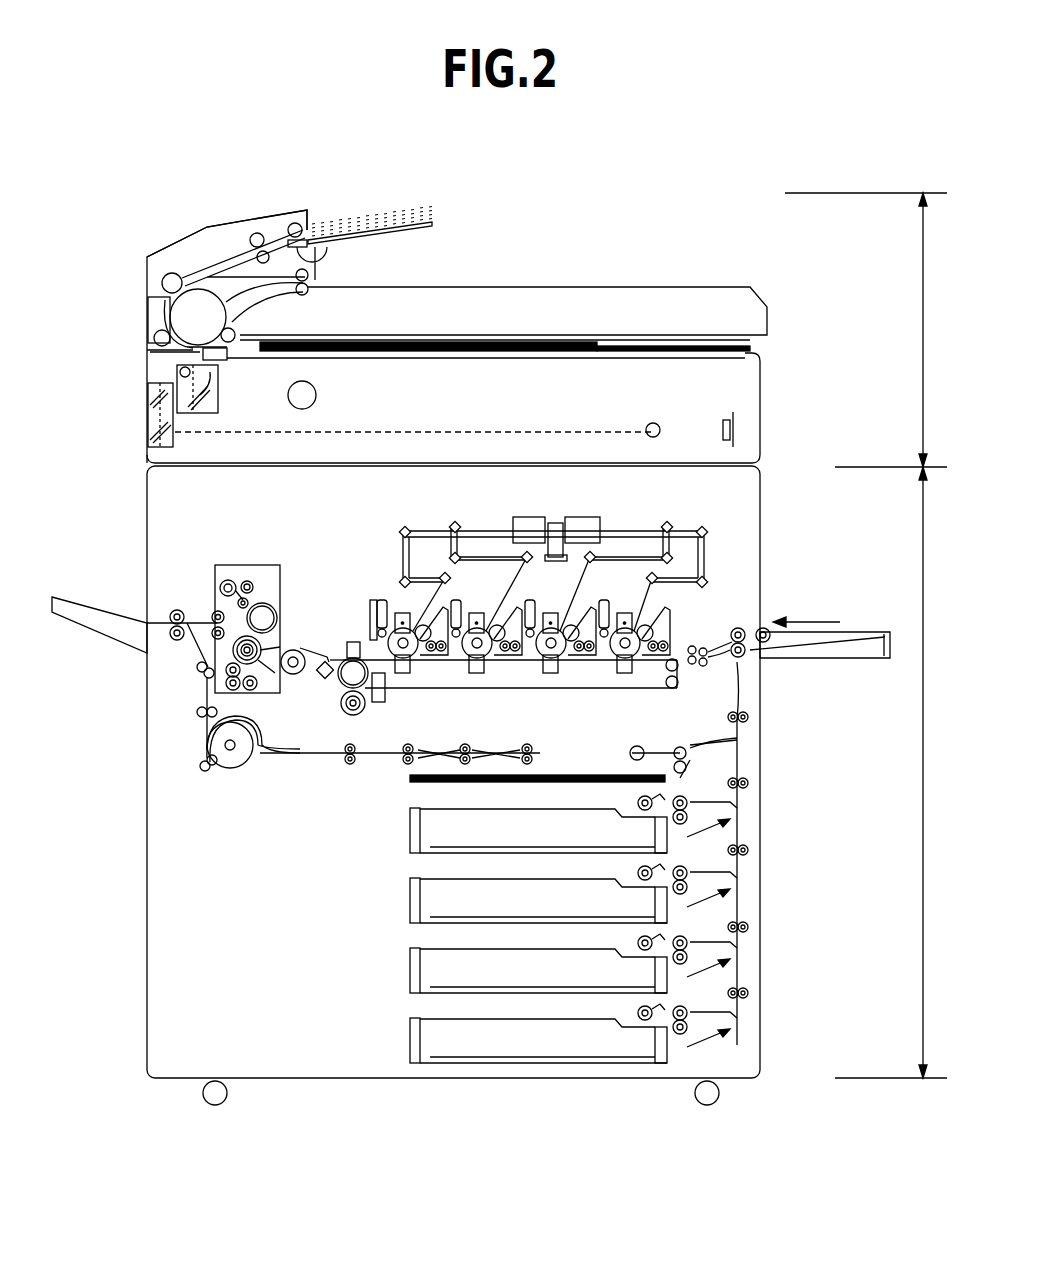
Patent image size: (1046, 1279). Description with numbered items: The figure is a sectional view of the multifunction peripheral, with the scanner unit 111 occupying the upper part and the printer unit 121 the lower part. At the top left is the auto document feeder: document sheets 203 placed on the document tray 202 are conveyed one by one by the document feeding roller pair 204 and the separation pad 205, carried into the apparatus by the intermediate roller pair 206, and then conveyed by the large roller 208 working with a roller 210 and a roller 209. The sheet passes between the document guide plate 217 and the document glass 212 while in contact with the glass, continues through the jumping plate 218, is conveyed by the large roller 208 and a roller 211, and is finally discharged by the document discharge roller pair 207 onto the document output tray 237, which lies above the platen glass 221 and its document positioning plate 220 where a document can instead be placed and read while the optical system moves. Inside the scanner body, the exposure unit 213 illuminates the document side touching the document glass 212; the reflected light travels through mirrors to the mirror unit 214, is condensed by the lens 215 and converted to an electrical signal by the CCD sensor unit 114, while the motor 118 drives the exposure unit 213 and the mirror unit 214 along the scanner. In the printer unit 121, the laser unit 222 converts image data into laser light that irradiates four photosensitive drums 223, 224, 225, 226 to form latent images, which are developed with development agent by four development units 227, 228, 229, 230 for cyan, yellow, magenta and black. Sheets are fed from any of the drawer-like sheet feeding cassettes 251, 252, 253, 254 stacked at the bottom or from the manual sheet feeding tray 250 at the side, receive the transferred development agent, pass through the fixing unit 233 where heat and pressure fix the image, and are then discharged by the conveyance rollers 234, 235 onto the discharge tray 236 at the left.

The scanner unit 111 is at (866, 330).
The printer unit 121 is at (879, 772).
The CCD sensor unit 114 is at (726, 420).
The motor 118 is at (316, 395).
The document tray 202 is at (434, 225).
The document sheets 203 is at (405, 205).
The document feeding roller pair 204 is at (297, 208).
The separation pad 205 is at (300, 224).
The intermediate roller pair 206 is at (257, 233).
The document discharge roller pair 207 is at (310, 283).
The large roller 208 is at (165, 320).
The roller 209 is at (172, 273).
The roller 210 is at (154, 338).
The roller 211 is at (236, 335).
The document glass 212 is at (150, 352).
The exposure unit 213 is at (205, 413).
The mirror unit 214 is at (148, 435).
The lens 215 is at (653, 423).
The document guide plate 217 is at (195, 342).
The jumping plate 218 is at (215, 360).
The document positioning plate 220 is at (548, 341).
The platen glass 221 is at (658, 345).
The laser unit 222 is at (582, 517).
The photosensitive drum 223 is at (642, 660).
The photosensitive drum 224 is at (549, 673).
The photosensitive drum 225 is at (474, 673).
The photosensitive drum 226 is at (392, 660).
The development unit 227 is at (683, 628).
The development unit 228 is at (600, 655).
The development unit 229 is at (523, 655).
The development unit 230 is at (448, 655).
The fixing unit 233 is at (282, 580).
The conveyance roller 234 is at (200, 612).
The conveyance roller 235 is at (202, 662).
The discharge tray 236 is at (95, 628).
The document output tray 237 is at (553, 287).
The manual sheet feeding tray 250 is at (818, 660).
The sheet feeding cassette 251 is at (408, 834).
The sheet feeding cassette 252 is at (408, 904).
The sheet feeding cassette 253 is at (408, 974).
The sheet feeding cassette 254 is at (408, 1044).